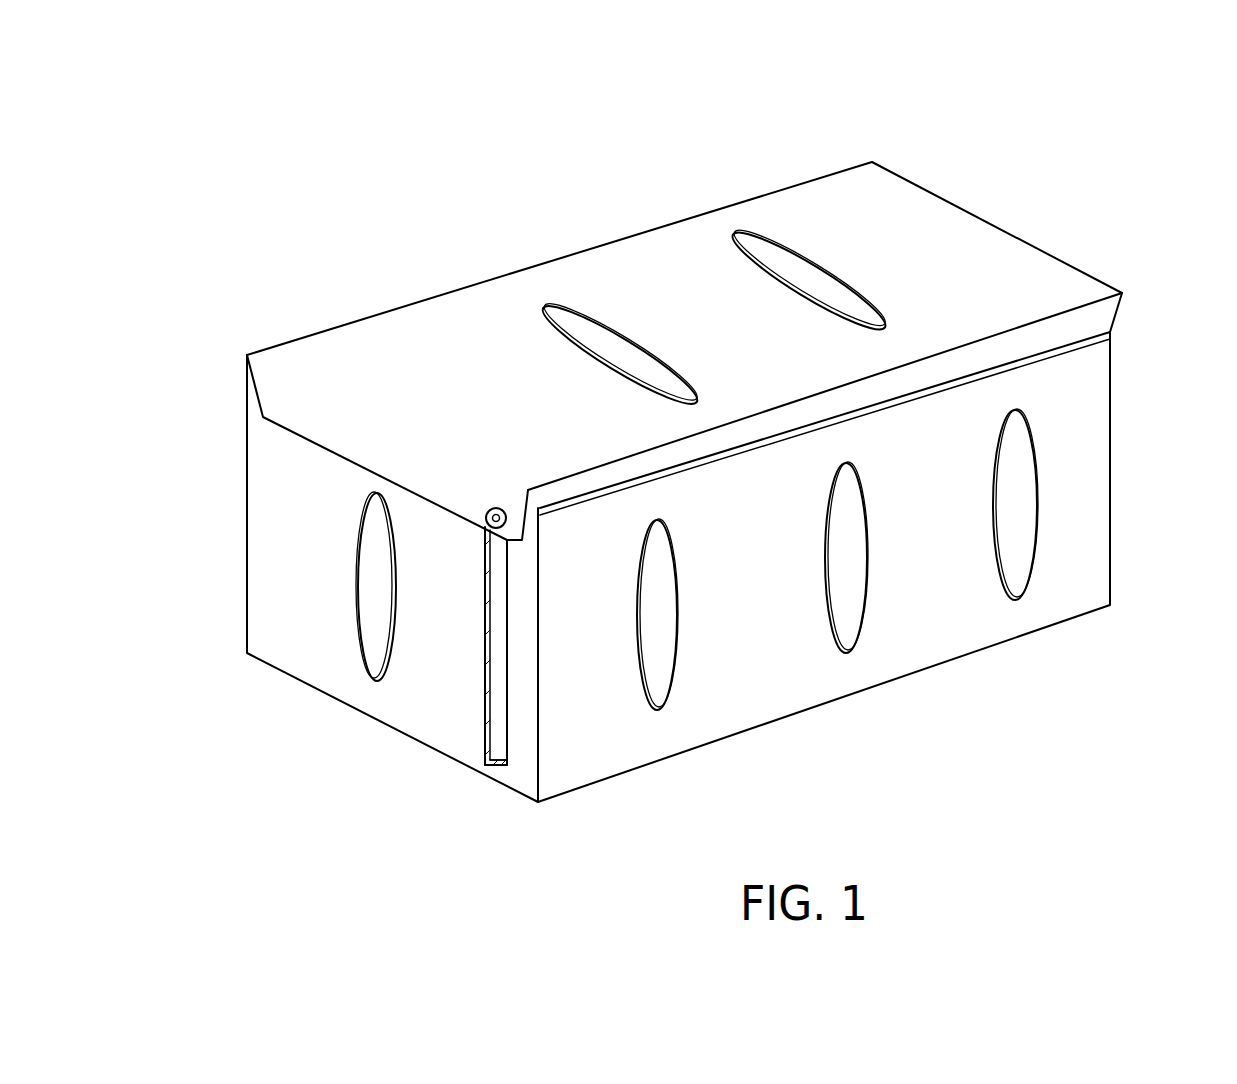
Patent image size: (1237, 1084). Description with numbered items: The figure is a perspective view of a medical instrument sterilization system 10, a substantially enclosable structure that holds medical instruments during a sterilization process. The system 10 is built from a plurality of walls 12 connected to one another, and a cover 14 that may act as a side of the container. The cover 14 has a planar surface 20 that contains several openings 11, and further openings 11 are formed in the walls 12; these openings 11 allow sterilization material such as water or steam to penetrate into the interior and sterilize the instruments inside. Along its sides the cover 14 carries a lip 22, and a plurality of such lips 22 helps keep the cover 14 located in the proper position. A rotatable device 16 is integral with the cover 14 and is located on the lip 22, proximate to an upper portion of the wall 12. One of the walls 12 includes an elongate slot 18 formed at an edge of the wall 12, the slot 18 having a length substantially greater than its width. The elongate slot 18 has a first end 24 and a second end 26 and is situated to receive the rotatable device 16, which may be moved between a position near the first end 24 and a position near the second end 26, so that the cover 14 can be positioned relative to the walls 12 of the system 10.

The medical instrument sterilization system 10 is at (1083, 185).
The openings 11 is at (752, 237).
The walls 12 is at (928, 633).
The cover 14 is at (908, 242).
The rotatable device 16 is at (496, 506).
The elongate slot 18 is at (485, 637).
The planar surface 20 is at (422, 353).
The lip 22 is at (290, 402).
The first end 24 is at (482, 755).
The second end 26 is at (507, 557).